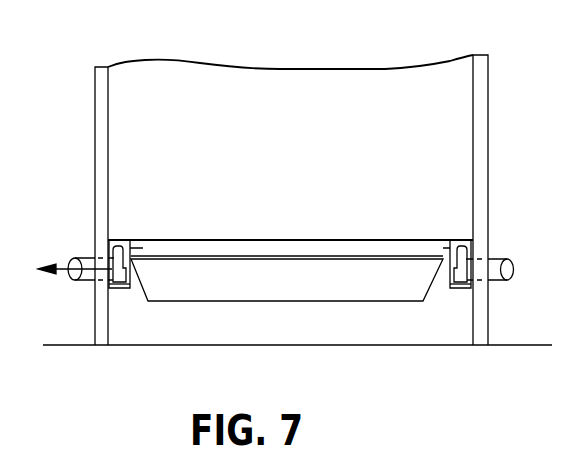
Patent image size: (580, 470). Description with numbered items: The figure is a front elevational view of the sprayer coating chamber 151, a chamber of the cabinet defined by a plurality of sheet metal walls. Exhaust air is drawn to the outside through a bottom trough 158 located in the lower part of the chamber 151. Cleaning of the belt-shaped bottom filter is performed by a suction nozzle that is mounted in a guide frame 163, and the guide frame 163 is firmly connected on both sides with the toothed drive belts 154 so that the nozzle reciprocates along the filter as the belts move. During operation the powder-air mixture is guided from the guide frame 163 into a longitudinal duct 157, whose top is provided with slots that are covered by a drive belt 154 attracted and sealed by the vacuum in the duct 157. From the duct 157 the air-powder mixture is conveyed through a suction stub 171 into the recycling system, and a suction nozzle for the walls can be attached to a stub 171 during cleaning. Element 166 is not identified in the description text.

The coating chamber 151 is at (466, 137).
The drive belt 154 is at (118, 240).
The longitudinal duct 157 is at (117, 290).
The bottom trough 158 is at (288, 302).
The guide frame 163 is at (292, 246).
The bracket foot / latch 166 is at (462, 290).
The suction stub 171 is at (86, 257).